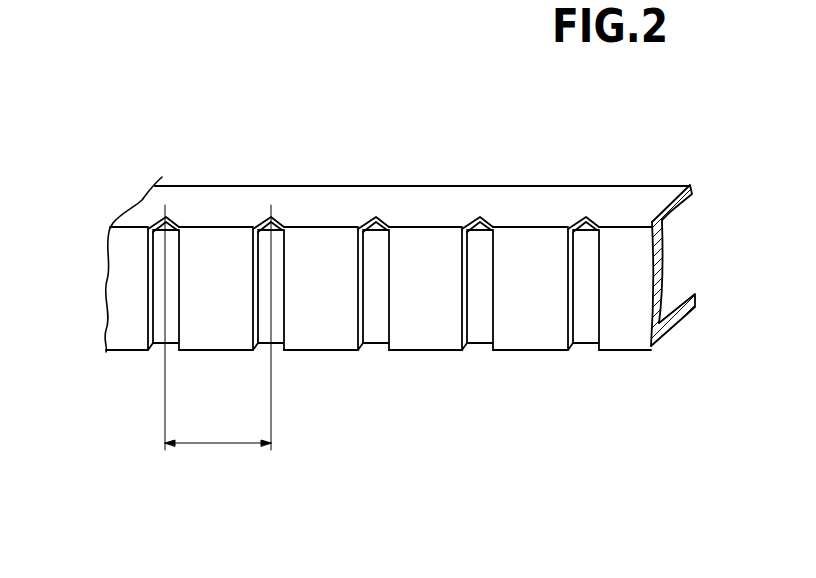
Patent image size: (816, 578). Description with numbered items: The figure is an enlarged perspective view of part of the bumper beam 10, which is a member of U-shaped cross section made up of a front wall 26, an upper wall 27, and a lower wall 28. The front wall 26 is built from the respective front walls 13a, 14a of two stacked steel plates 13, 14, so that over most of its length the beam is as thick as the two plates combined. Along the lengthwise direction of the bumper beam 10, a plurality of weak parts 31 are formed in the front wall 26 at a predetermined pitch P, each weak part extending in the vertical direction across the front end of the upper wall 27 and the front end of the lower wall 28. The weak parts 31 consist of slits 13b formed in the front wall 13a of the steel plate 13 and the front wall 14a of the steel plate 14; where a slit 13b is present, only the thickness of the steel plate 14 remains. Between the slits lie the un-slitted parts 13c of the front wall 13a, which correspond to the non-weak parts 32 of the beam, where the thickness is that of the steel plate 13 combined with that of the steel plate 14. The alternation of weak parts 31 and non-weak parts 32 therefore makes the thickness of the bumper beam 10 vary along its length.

The bumper beam 10 is at (267, 108).
The steel plate 13 is at (657, 195).
The front wall of the steel plate 13a is at (446, 332).
The slits 13b is at (150, 302).
The un-slitted parts 13c is at (127, 242).
The steel plate 14 is at (687, 210).
The front wall of the steel plate 14a is at (484, 245).
The front wall 26 is at (422, 332).
The upper wall 27 is at (425, 207).
The lower wall 28 is at (680, 318).
The weak parts 31 is at (158, 347).
The non-weak parts 32 is at (200, 258).
The pitch P is at (218, 327).